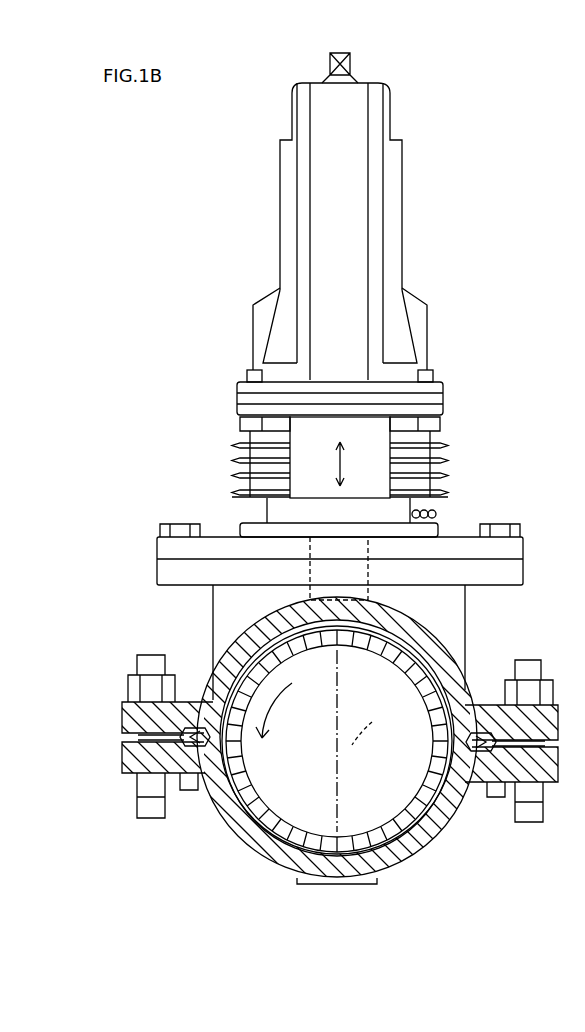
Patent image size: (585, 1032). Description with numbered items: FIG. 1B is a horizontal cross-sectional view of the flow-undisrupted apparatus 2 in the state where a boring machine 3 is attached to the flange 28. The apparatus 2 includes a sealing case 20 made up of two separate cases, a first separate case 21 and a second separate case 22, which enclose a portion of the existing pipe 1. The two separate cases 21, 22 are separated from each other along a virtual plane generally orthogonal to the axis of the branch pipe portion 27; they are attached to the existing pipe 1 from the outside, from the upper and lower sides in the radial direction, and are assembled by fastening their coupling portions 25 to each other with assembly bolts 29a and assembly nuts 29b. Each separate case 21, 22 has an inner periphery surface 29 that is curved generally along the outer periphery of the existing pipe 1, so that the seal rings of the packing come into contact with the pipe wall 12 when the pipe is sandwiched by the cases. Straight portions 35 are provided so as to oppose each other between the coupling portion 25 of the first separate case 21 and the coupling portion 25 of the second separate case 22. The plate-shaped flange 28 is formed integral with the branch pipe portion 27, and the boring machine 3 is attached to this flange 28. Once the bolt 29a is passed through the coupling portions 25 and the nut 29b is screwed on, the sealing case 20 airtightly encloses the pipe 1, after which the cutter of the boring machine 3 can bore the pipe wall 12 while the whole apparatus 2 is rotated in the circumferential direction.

The existing pipe 1 is at (236, 822).
The present apparatus 2 is at (468, 304).
The boring machine 3 is at (352, 242).
The pipe wall 12 is at (288, 843).
The sealing case 20 is at (62, 700).
The first separate case 21 is at (122, 716).
The second separate case 22 is at (122, 756).
The coupling portion 25 is at (500, 717).
The branch pipe portion 27 is at (213, 606).
The flange 28 is at (157, 565).
The inner periphery surface 29 is at (400, 672).
The assembly bolt 29a is at (524, 815).
The assembly nut 29b is at (128, 683).
The straight portion 35 is at (197, 727).